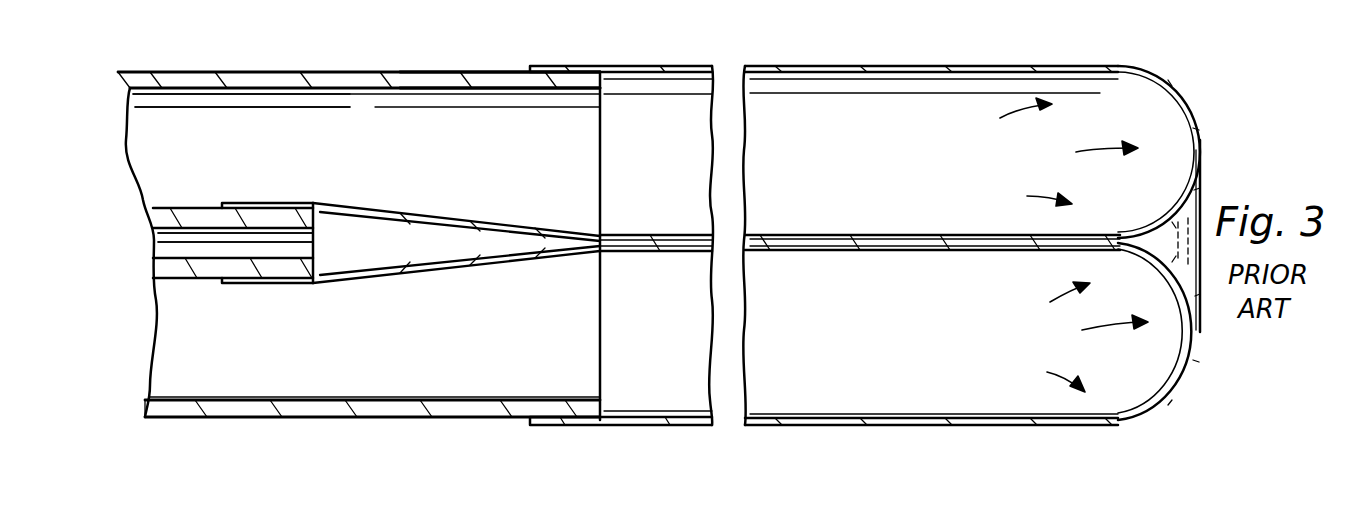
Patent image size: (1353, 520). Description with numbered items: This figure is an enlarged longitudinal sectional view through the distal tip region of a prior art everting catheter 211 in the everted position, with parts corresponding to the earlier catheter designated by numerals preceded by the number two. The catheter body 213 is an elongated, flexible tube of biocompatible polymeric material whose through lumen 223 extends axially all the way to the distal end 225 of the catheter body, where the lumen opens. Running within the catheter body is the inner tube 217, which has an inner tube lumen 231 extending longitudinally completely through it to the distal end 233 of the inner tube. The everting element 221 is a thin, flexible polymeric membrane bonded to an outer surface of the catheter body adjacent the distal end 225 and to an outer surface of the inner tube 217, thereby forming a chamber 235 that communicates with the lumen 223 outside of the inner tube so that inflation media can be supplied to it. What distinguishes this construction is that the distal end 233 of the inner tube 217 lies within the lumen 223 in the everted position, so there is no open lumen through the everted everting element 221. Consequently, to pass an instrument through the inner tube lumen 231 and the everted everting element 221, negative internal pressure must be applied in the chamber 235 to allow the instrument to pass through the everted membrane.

The catheter 211 is at (352, 68).
The catheter body 213 is at (488, 86).
The inner tube 217 is at (154, 222).
The everting element 221 is at (964, 66).
The through lumen 223 is at (210, 106).
The distal end of catheter body 225 is at (614, 80).
The inner tube lumen 231 is at (158, 244).
The distal end of inner tube 233 is at (360, 148).
The chamber 235 is at (1072, 112).